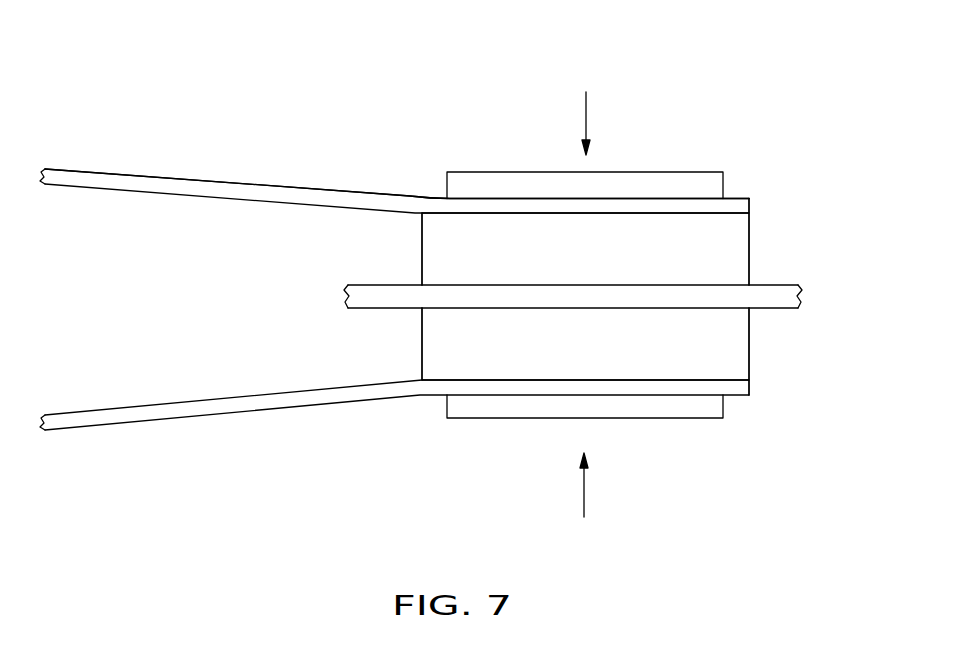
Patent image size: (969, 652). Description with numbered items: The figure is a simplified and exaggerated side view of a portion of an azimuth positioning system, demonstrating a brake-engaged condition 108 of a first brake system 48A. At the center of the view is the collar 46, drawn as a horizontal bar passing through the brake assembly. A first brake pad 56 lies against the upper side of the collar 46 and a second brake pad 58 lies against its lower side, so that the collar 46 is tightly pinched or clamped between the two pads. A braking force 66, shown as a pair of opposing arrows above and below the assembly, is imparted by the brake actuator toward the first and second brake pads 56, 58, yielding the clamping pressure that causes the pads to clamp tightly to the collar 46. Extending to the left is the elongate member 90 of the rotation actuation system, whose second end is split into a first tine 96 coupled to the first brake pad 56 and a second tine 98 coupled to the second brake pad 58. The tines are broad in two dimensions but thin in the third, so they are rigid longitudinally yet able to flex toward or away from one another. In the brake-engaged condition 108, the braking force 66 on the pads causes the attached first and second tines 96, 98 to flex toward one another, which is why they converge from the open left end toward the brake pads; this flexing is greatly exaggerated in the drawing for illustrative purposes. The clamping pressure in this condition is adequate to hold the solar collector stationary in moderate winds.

The first brake system 48A is at (418, 120).
The elongate member 90 is at (130, 171).
The first tine 96 is at (288, 193).
The second tine 98 is at (278, 403).
The collar 46 is at (387, 307).
The first brake pad 56 is at (745, 238).
The second brake pad 58 is at (745, 345).
The braking force 66 is at (586, 118).
The brake-engaged condition 108 is at (170, 527).